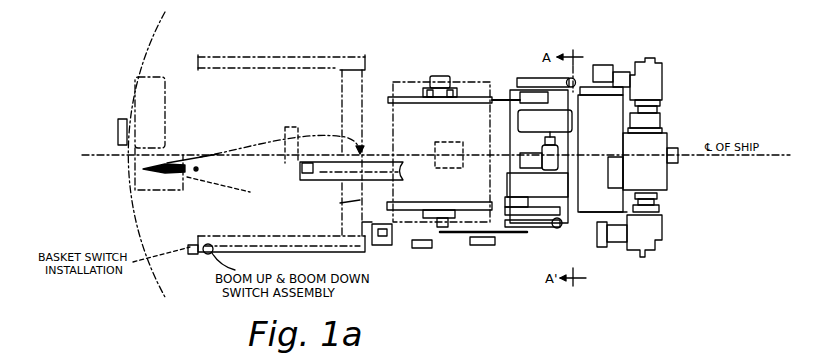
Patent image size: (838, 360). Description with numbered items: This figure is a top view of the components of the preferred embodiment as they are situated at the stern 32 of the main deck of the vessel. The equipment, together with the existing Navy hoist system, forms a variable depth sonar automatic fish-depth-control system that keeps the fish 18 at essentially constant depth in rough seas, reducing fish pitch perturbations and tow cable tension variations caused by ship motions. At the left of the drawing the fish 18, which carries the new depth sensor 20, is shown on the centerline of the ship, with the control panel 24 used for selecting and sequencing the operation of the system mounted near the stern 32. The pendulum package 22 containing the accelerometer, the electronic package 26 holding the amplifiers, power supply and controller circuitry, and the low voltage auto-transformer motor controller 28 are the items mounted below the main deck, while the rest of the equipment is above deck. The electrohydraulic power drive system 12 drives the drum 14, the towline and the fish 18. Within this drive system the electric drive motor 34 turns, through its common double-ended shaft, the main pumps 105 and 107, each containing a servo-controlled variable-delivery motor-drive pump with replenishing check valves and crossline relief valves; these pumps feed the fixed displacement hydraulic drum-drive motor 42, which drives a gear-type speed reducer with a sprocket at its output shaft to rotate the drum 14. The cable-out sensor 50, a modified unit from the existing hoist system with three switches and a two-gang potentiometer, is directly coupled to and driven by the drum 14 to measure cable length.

The electrohydraulic power drive system 12 is at (655, 43).
The drum 14 is at (393, 131).
The fish 18 is at (248, 147).
The depth sensor 20 is at (300, 170).
The pendulum package 22 is at (293, 127).
The control panel 24 is at (118, 135).
The electronic package 26 is at (447, 143).
The motor controller 28 is at (573, 208).
The stern 32 is at (128, 201).
The electric drive motor 34 is at (657, 182).
The drum-drive motor 42 is at (548, 160).
The cable-out sensor 50 is at (440, 76).
The main pump 105 is at (652, 229).
The main pump 107 is at (647, 83).